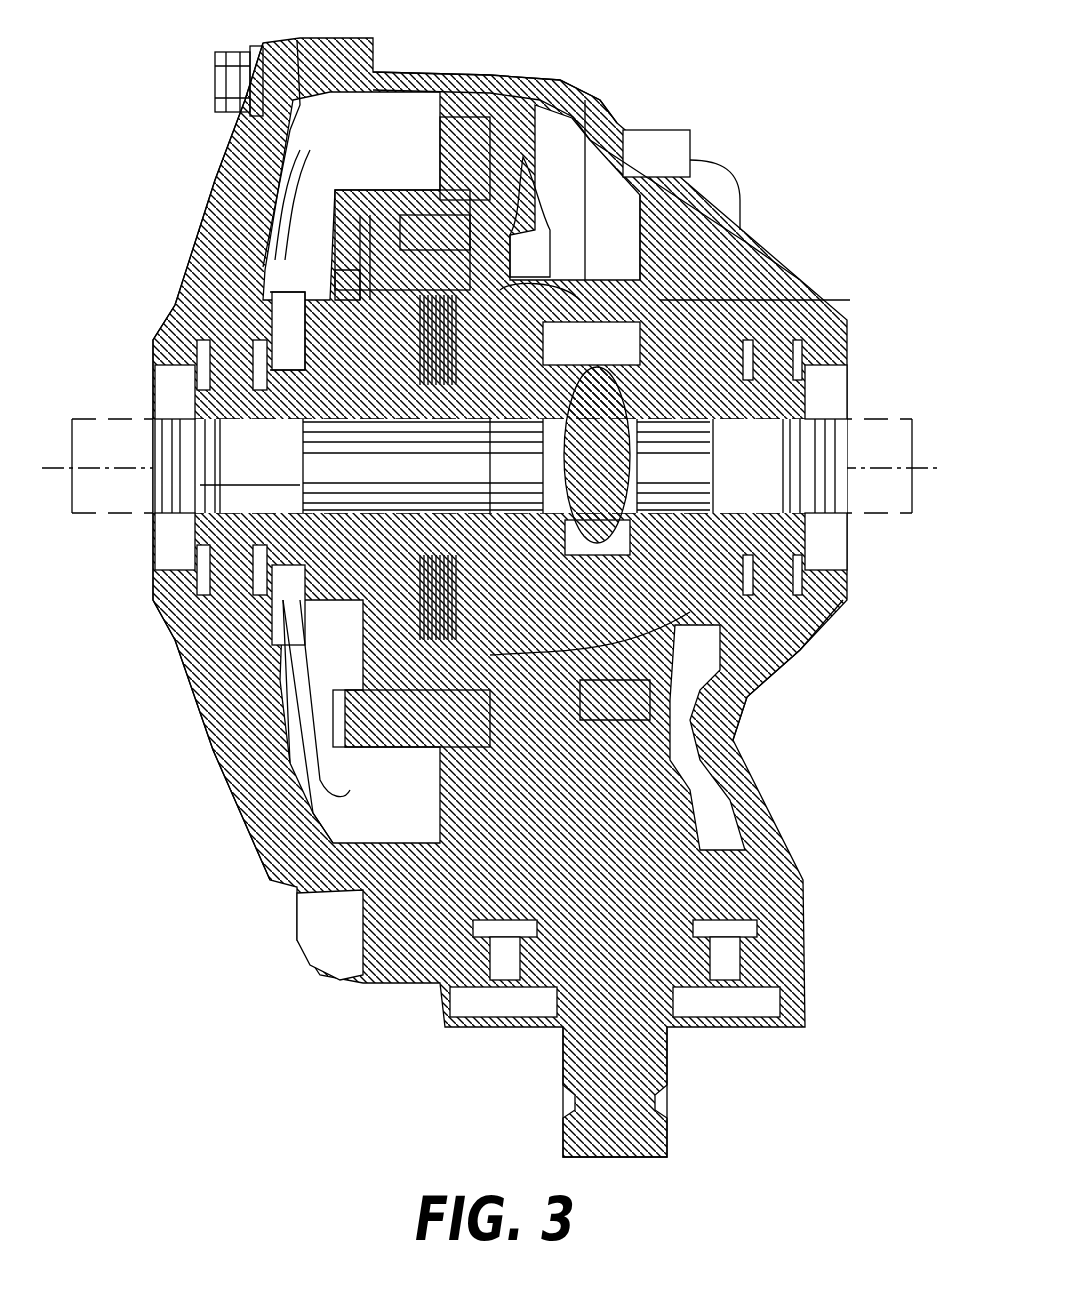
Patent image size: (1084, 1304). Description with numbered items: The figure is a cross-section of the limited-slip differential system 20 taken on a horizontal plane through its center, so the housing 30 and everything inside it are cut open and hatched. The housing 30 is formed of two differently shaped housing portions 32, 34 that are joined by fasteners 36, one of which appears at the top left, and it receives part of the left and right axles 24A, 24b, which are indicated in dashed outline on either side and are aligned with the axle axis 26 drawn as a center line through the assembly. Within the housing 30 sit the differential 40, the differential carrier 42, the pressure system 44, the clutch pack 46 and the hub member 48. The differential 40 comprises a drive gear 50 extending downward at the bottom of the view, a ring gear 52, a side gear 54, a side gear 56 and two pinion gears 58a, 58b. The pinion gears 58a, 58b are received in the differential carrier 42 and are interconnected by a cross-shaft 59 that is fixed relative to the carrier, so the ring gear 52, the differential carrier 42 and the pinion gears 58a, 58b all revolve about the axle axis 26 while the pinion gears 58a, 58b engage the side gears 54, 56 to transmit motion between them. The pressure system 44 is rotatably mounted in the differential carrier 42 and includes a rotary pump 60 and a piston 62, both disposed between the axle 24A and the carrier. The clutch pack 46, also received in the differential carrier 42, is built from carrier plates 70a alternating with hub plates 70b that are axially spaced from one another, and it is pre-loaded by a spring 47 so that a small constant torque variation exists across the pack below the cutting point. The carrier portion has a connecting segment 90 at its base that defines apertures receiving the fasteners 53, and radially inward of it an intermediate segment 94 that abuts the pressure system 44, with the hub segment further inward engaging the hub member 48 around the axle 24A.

The limited-slip differential system 20 is at (116, 70).
The left axle 24A is at (97, 418).
The right axle 24b is at (890, 418).
The axle axis 26 is at (930, 485).
The housing 30 is at (612, 104).
The housing portion 32 is at (232, 178).
The housing portion 34 is at (508, 80).
The fastener 36 is at (215, 66).
The differential 40 is at (478, 105).
The differential carrier 42 is at (650, 272).
The pressure system 44 is at (370, 660).
The clutch pack 46 is at (765, 660).
The spring 47 is at (400, 290).
The hub member 48 is at (185, 528).
The drive gear 50 is at (700, 800).
The ring gear 52 is at (542, 160).
The fastener 53 is at (350, 190).
The side gear 54 is at (520, 300).
The side gear 56 is at (705, 330).
The pinion gear 58a is at (585, 305).
The pinion gear 58b is at (690, 612).
The cross-shaft 59 is at (608, 435).
The rotary pump 60 is at (340, 290).
The piston 62 is at (357, 300).
The carrier plate 70a is at (440, 327).
The hub plate 70b is at (440, 516).
The connecting segment 90 is at (375, 282).
The intermediate segment 94 is at (305, 292).